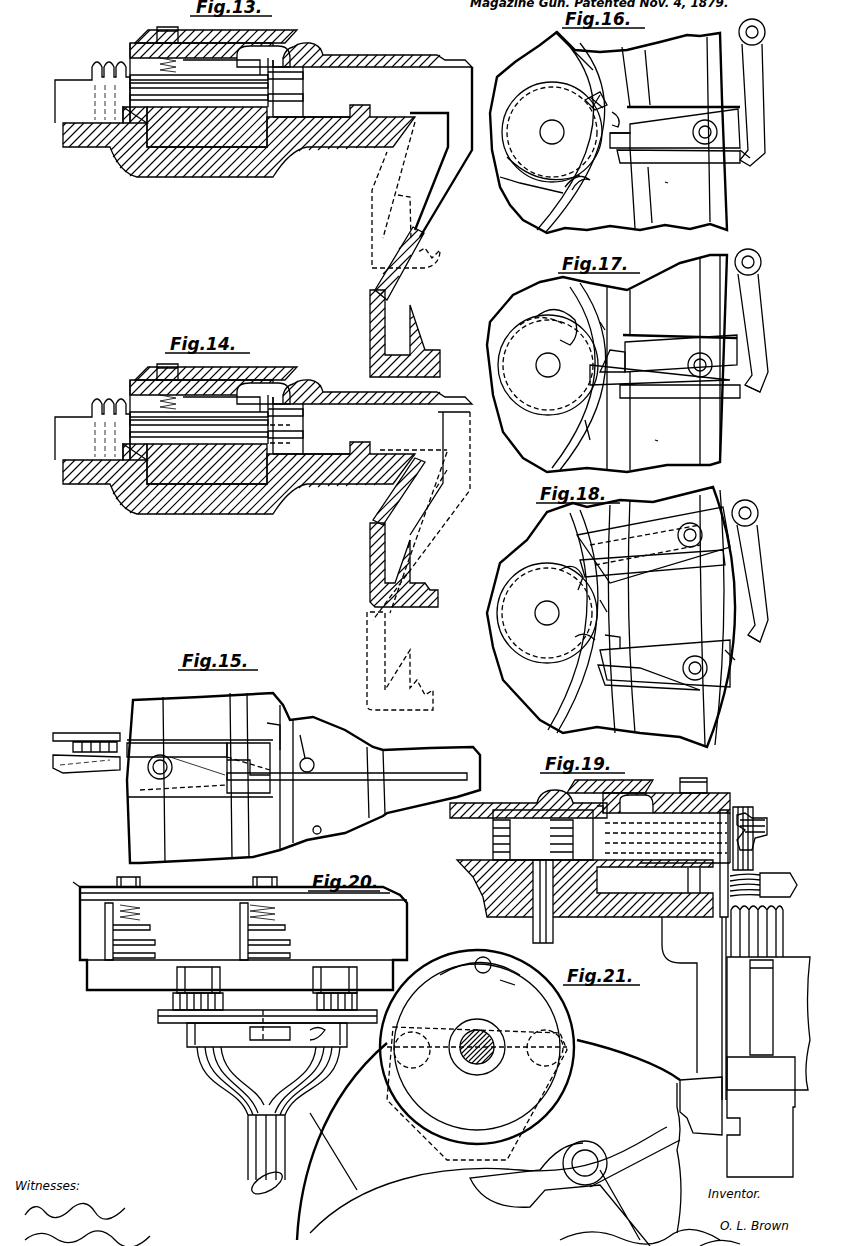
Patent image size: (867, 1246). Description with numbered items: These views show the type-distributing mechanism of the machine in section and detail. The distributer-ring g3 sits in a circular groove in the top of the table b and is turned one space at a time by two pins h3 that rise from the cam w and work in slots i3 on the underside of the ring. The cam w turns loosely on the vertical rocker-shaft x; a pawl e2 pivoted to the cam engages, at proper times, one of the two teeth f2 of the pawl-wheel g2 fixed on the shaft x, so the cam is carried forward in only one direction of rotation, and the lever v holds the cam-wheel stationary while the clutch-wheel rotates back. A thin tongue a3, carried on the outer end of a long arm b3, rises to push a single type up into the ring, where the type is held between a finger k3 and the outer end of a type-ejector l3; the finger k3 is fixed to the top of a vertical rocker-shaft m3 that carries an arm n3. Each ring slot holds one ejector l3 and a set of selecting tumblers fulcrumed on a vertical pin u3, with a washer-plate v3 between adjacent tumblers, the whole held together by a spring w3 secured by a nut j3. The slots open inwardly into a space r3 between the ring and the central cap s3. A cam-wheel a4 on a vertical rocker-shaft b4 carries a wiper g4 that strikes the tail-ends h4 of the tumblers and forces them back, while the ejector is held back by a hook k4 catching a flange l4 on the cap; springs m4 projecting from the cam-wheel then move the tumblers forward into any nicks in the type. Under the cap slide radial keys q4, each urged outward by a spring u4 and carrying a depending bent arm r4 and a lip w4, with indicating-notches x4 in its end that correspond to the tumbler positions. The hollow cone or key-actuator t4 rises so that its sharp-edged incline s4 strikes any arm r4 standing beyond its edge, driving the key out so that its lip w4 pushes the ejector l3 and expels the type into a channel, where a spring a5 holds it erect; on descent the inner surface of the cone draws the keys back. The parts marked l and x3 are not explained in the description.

In FIG. 19, the tongue a3 is at (720, 955).
In FIG. 16, the cam-wheel a4 is at (552, 132).
In FIG. 17, the cam-wheel a4 is at (548, 365).
In FIG. 18, the cam-wheel a4 is at (547, 613).
In FIG. 19, the cam-wheel a4 is at (543, 835).
In FIG. 13, the spring a5 is at (92, 92).
In FIG. 14, the spring a5 is at (92, 429).
In FIG. 15, the spring a5 is at (86, 757).
In FIG. 13, the table b is at (239, 141).
In FIG. 14, the table b is at (239, 478).
In FIG. 19, the table b is at (585, 888).
In FIG. 19, the long arm b3 is at (681, 1004).
In FIG. 17, the vertical rocker-shaft b4 is at (548, 363).
In FIG. 19, the vertical rocker-shaft b4 is at (543, 901).
In FIG. 20, the spring-clutch or pawl e2 is at (267, 1028).
In FIG. 21, the spring-clutch or pawl e2 is at (480, 960).
In FIG. 21, the teeth f2 is at (477, 1066).
In FIG. 20, the pawl-wheel g2 is at (321, 1037).
In FIG. 21, the pawl-wheel g2 is at (477, 1047).
In FIG. 13, the distributer-ring g3 is at (207, 127).
In FIG. 14, the distributer-ring g3 is at (207, 464).
In FIG. 15, the distributer-ring g3 is at (303, 778).
In FIG. 16, the distributer-ring g3 is at (608, 132).
In FIG. 17, the distributer-ring g3 is at (607, 363).
In FIG. 18, the distributer-ring g3 is at (611, 617).
In FIG. 19, the distributer-ring g3 is at (666, 842).
In FIG. 20, the distributer-ring g3 is at (243, 938).
In FIG. 21, the distributer-ring g3 is at (489, 1140).
In FIG. 13, the cam or wiper g4 is at (325, 92).
In FIG. 14, the cam or wiper g4 is at (332, 429).
In FIG. 15, the cam or wiper g4 is at (347, 769).
In FIG. 18, the cam or wiper g4 is at (573, 579).
In FIG. 18, the pins h3 is at (735, 655).
In FIG. 20, the pins h3 is at (267, 980).
In FIG. 13, the tail-ends h4 is at (399, 263).
In FIG. 14, the tail-ends h4 is at (404, 560).
In FIG. 16, the tail-ends h4 is at (620, 140).
In FIG. 17, the tail-ends h4 is at (613, 357).
In FIG. 18, the tail-ends h4 is at (614, 638).
In FIG. 16, the slots i3 is at (678, 134).
In FIG. 17, the slots i3 is at (668, 373).
In FIG. 18, the slots i3 is at (652, 584).
In FIG. 20, the slots i3 is at (230, 987).
In FIG. 21, the slots i3 is at (495, 1151).
In FIG. 19, the nut j3 is at (699, 783).
In FIG. 20, the nut j3 is at (204, 879).
In FIG. 16, the finger k3 is at (753, 160).
In FIG. 17, the finger k3 is at (763, 380).
In FIG. 18, the finger k3 is at (761, 640).
In FIG. 13, the hook k4 is at (263, 56).
In FIG. 14, the hook k4 is at (258, 393).
In FIG. 15, the hook k4 is at (205, 768).
In FIG. 19, the magazine case l is at (768, 1067).
In FIG. 13, the type-ejector l3 is at (221, 68).
In FIG. 14, the type-ejector l3 is at (199, 422).
In FIG. 15, the type-ejector l3 is at (188, 775).
In FIG. 16, the type-ejector l3 is at (675, 137).
In FIG. 17, the type-ejector l3 is at (680, 365).
In FIG. 18, the type-ejector l3 is at (653, 600).
In FIG. 19, the type-ejector l3 is at (735, 835).
In FIG. 20, the type-ejector l3 is at (169, 931).
In FIG. 21, the type-ejector l3 is at (701, 1105).
In FIG. 16, the flange l4 is at (558, 147).
In FIG. 17, the flange l4 is at (592, 430).
In FIG. 18, the flange l4 is at (565, 650).
In FIG. 16, the vertical rocker-shaft m3 is at (752, 89).
In FIG. 17, the vertical rocker-shaft m3 is at (751, 318).
In FIG. 18, the vertical rocker-shaft m3 is at (750, 568).
In FIG. 16, the springs m4 is at (578, 179).
In FIG. 18, the springs m4 is at (580, 632).
In FIG. 13, the arm n3 is at (146, 122).
In FIG. 14, the arm n3 is at (150, 454).
In FIG. 16, the keys q4 is at (619, 117).
In FIG. 17, the keys q4 is at (552, 325).
In FIG. 15, the space r3 is at (263, 768).
In FIG. 16, the space r3 is at (597, 93).
In FIG. 17, the space r3 is at (606, 322).
In FIG. 18, the space r3 is at (606, 603).
In FIG. 14, the bent arm r4 is at (435, 485).
In FIG. 13, the cap s3 is at (377, 55).
In FIG. 14, the cap s3 is at (377, 392).
In FIG. 20, the cap s3 is at (74, 878).
In FIG. 13, the sharp-edged flange or incline s4 is at (405, 333).
In FIG. 14, the sharp-edged flange or incline s4 is at (415, 540).
In FIG. 13, the hollow cone or key-actuator t4 is at (437, 167).
In FIG. 14, the hollow cone or key-actuator t4 is at (399, 491).
In FIG. 15, the vertical pin u3 is at (160, 767).
In FIG. 18, the vertical pin u3 is at (695, 668).
In FIG. 19, the vertical pin u3 is at (695, 880).
In FIG. 15, the spring u4 is at (312, 777).
In FIG. 21, the lever v is at (560, 1193).
In FIG. 13, the washer-plate v3 is at (199, 86).
In FIG. 14, the washer-plate v3 is at (199, 424).
In FIG. 18, the washer-plate v3 is at (649, 676).
In FIG. 20, the washer-plate v3 is at (201, 935).
In FIG. 20, the cam w is at (267, 1014).
In FIG. 21, the cam w is at (512, 972).
In FIG. 19, the spring w3 is at (667, 837).
In FIG. 20, the spring w3 is at (207, 912).
In FIG. 13, the lip w4 is at (275, 61).
In FIG. 14, the lip w4 is at (267, 398).
In FIG. 19, the lip w4 is at (601, 813).
In FIG. 20, the vertical rocker-shaft x is at (268, 1122).
In FIG. 21, the vertical rocker-shaft x is at (477, 1047).
In FIG. 16, the slot x3 is at (672, 188).
In FIG. 17, the slot x3 is at (663, 438).
In FIG. 13, the indicating-notches x4 is at (293, 85).
In FIG. 14, the indicating-notches x4 is at (285, 424).
In FIG. 19, the indicating-notches x4 is at (529, 804).